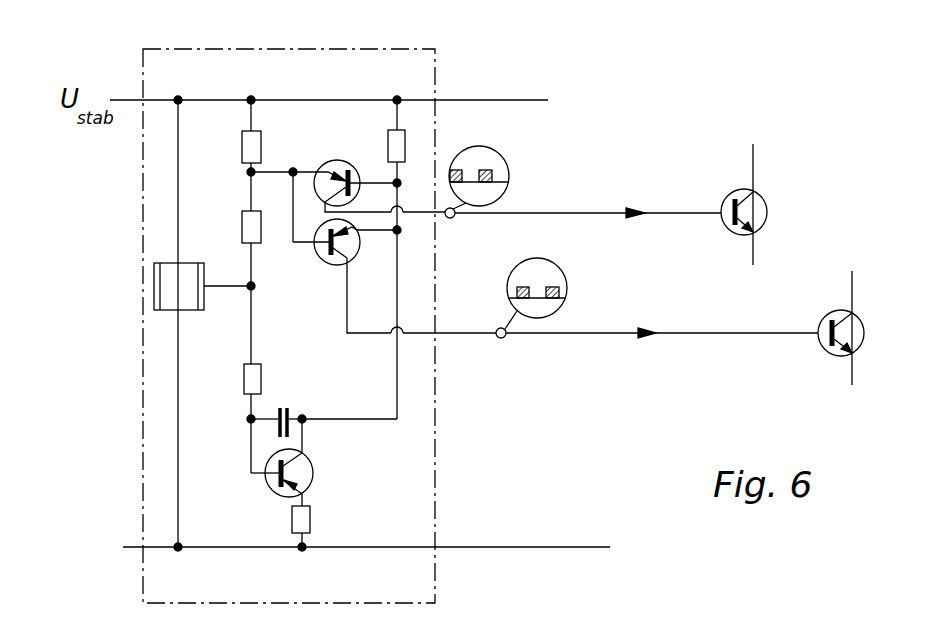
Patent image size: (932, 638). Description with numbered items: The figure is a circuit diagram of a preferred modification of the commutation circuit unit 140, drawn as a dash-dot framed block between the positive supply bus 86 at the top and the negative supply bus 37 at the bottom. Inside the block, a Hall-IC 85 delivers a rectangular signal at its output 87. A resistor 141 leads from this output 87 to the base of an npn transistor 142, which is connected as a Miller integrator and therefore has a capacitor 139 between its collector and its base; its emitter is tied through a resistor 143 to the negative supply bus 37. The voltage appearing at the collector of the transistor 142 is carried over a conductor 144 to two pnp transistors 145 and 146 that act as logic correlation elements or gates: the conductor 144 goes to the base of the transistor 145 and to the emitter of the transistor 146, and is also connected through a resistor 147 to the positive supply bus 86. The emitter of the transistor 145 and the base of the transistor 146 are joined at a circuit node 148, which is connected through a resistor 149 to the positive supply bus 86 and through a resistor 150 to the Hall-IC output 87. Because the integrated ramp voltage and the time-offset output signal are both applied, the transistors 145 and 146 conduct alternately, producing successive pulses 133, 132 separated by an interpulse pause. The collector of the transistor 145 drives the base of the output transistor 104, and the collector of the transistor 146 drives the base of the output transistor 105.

The commutation circuit unit 140 is at (268, 49).
The positive supply bus 86 is at (300, 100).
The resistor 149 is at (242, 150).
The pnp transistor 145 is at (337, 160).
The resistor 147 is at (397, 148).
The circuit node 148 is at (251, 172).
The resistor 150 is at (242, 222).
The Hall-IC 85 is at (197, 263).
The output of the Hall-IC 87 is at (251, 286).
The pnp transistor 146 is at (337, 265).
The pulse 133 is at (485, 170).
The pulse 132 is at (552, 287).
The transistor 104 is at (767, 212).
The transistor 105 is at (864, 333).
The resistor 141 is at (256, 378).
The capacitor 139 is at (282, 407).
The conductor 144 is at (383, 420).
The npn transistor 142 is at (313, 472).
The resistor 143 is at (310, 522).
The negative supply bus 37 is at (335, 548).